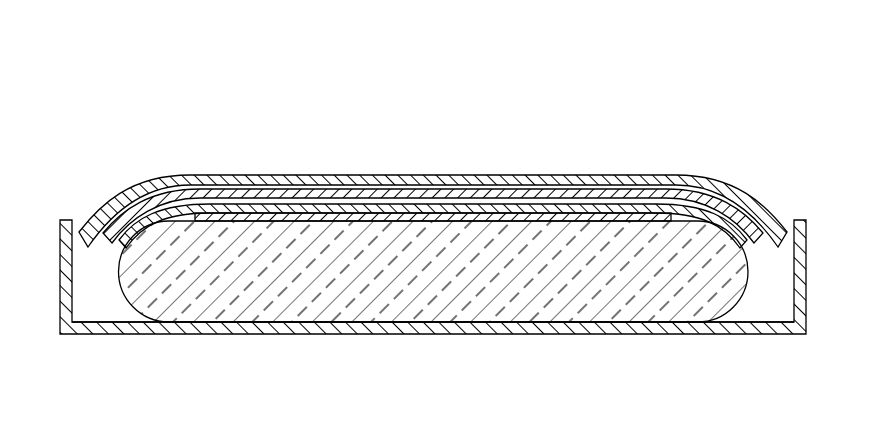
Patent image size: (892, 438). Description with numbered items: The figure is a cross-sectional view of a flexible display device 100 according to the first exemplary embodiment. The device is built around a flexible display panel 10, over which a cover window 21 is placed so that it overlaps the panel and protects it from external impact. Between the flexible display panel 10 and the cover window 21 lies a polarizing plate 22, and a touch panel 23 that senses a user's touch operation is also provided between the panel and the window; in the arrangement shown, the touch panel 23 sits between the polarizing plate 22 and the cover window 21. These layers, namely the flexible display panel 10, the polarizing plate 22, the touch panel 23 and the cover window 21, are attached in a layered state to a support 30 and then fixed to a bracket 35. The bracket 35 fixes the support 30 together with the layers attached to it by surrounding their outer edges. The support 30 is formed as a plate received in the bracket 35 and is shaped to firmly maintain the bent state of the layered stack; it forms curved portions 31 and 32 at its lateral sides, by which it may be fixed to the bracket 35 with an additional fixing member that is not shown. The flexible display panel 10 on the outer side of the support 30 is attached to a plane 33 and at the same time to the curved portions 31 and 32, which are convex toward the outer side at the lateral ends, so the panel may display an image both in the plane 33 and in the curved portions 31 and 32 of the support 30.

The flexible display device 100 is at (262, 103).
The flexible display panel 10 is at (515, 217).
The cover window 21 is at (325, 183).
The polarizing plate 22 is at (443, 208).
The touch panel 23 is at (386, 194).
The plane 33 is at (617, 219).
The support 30 is at (456, 327).
The curved portion 31 is at (120, 271).
The curved portion 32 is at (747, 271).
The bracket 35 is at (613, 328).